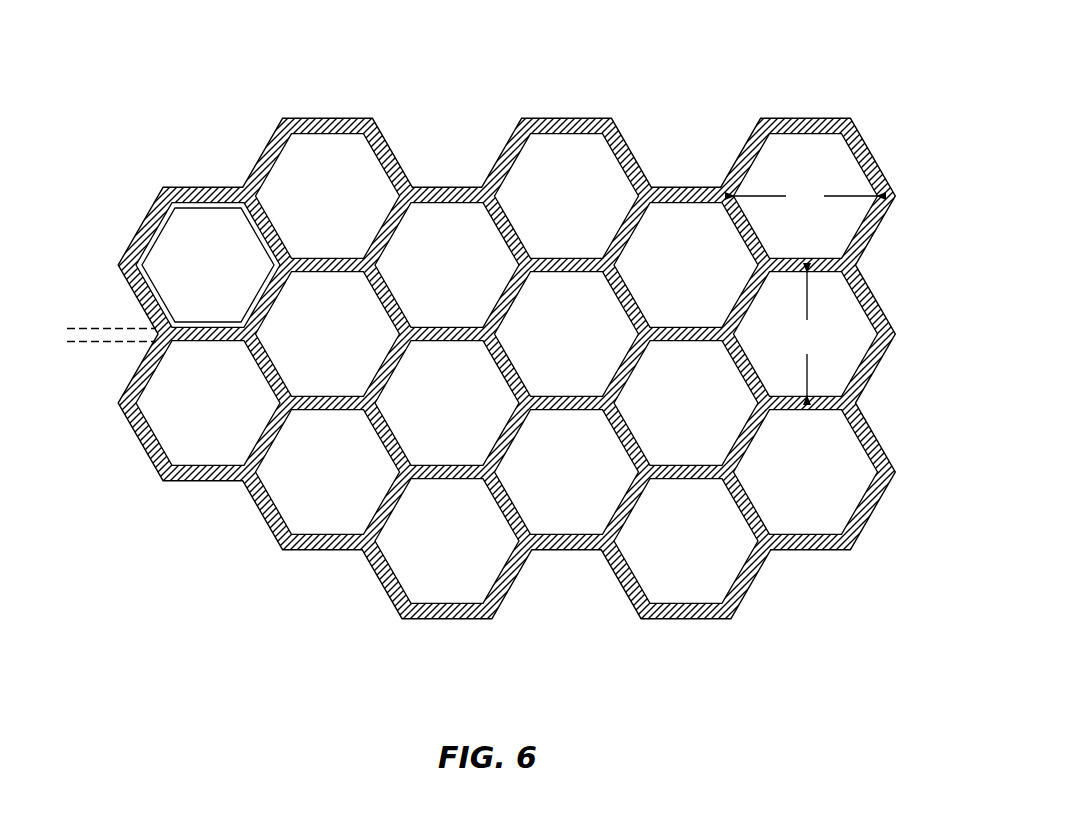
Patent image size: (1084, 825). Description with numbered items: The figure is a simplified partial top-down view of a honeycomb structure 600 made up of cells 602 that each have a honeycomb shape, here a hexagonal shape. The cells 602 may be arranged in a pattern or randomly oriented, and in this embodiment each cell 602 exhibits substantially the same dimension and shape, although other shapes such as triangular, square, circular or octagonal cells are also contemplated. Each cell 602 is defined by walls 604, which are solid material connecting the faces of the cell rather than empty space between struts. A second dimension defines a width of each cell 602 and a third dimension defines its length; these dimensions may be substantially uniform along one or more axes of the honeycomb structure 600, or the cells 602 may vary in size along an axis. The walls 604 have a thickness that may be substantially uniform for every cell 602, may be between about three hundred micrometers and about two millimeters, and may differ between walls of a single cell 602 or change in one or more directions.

The honeycomb structure 600 is at (501, 327).
The cell 602 is at (507, 369).
The wall 604 is at (862, 158).